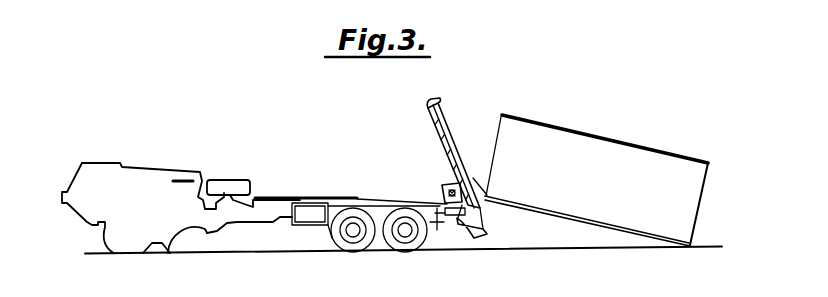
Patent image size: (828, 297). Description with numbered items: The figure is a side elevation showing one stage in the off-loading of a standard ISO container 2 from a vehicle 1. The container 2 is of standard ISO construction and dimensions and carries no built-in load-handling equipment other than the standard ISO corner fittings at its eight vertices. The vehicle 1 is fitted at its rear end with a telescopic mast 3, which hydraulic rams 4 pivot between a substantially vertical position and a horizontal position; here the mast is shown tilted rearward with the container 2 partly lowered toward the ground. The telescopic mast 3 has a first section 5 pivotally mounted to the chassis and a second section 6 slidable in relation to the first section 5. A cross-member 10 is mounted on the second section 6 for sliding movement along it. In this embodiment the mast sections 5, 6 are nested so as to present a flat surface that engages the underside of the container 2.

The vehicle 1 is at (112, 181).
The container 2 is at (661, 155).
The telescopic mast 3 is at (431, 149).
The hydraulic rams 4 is at (419, 199).
The first section 5 is at (461, 144).
The second section 6 is at (439, 103).
The cross-member 10 is at (478, 166).